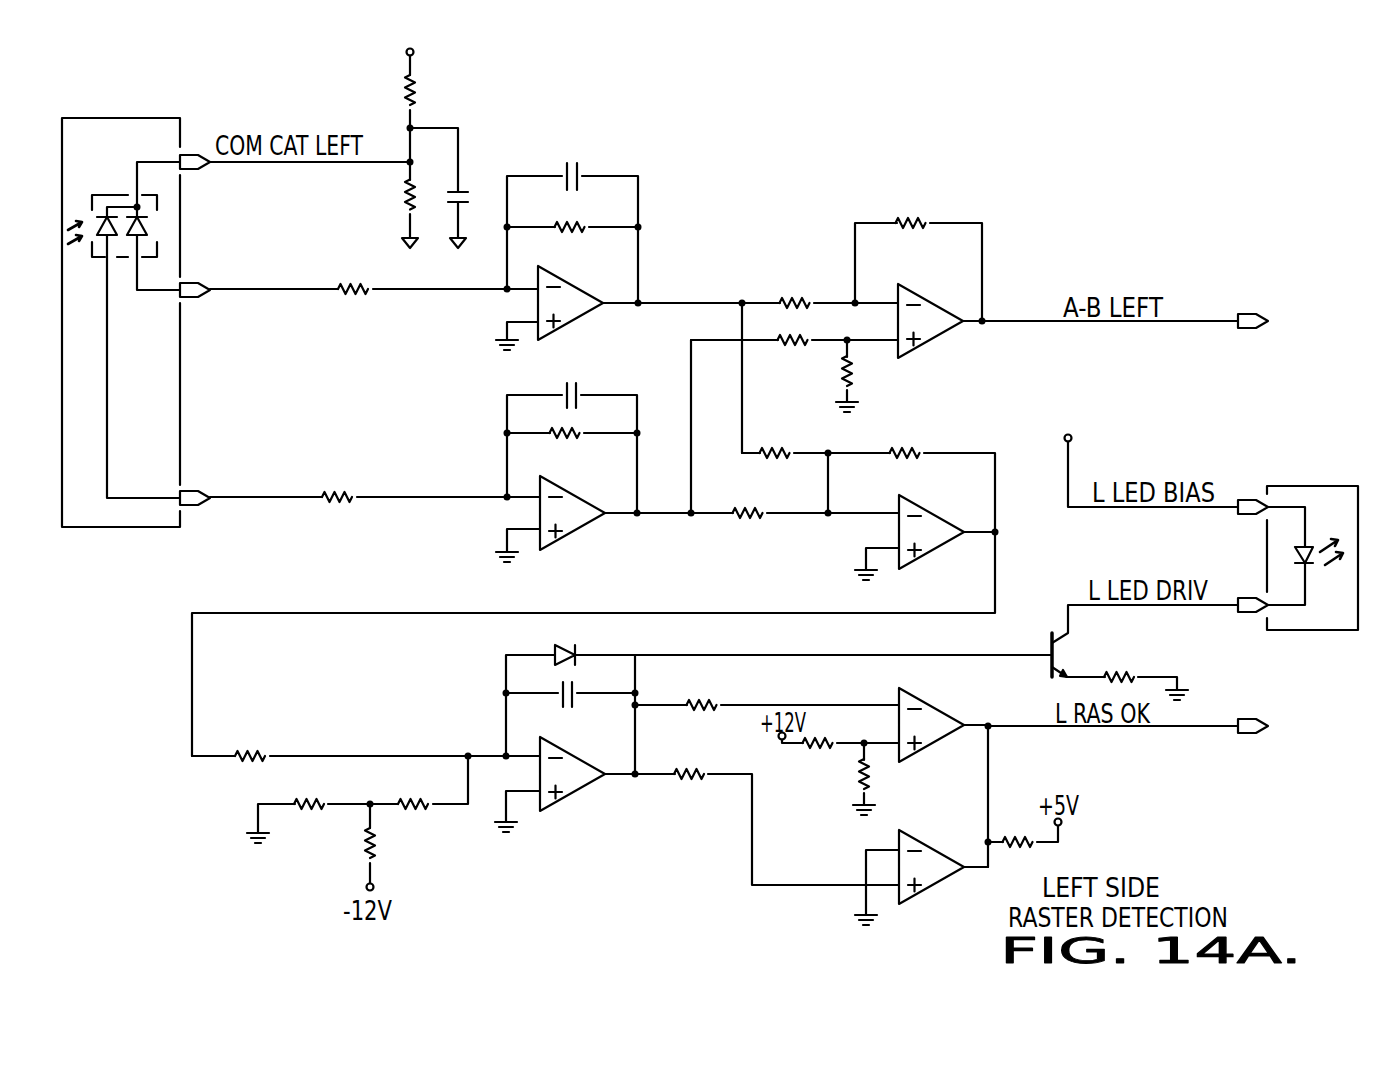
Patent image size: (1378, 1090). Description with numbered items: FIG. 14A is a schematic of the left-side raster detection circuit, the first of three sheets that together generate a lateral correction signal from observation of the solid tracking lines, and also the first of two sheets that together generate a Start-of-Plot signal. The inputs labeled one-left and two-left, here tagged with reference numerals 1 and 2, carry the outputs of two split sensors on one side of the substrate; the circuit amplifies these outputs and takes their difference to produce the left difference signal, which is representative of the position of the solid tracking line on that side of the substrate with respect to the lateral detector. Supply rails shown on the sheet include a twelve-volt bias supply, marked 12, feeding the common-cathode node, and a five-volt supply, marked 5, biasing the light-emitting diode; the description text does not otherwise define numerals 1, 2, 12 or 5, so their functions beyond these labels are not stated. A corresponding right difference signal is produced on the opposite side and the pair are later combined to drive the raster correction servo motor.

The 1 LEFT photodiode input 1 is at (358, 278).
The 2 LEFT photodiode input 2 is at (359, 486).
The +12V bias supply 12 is at (428, 135).
The +5V LED bias supply 5 is at (1157, 456).